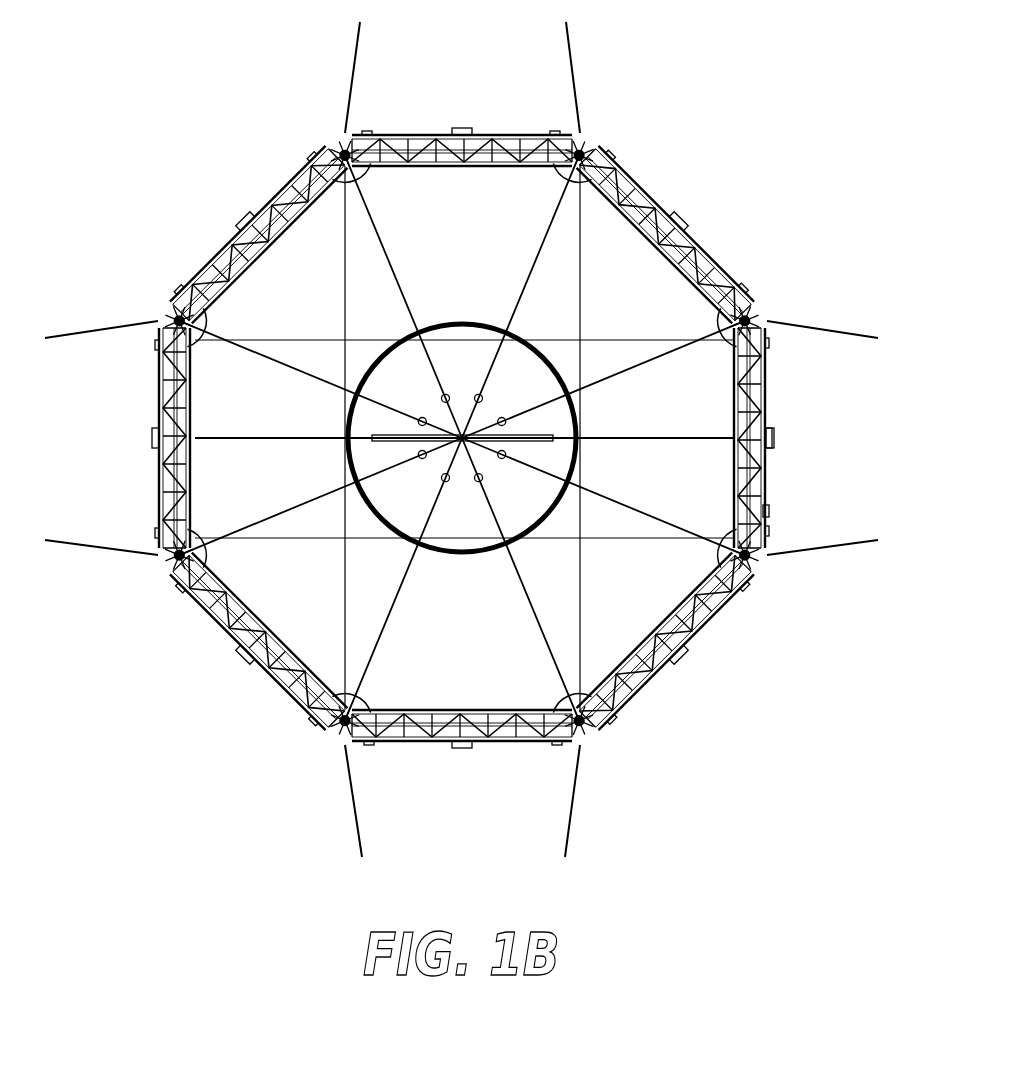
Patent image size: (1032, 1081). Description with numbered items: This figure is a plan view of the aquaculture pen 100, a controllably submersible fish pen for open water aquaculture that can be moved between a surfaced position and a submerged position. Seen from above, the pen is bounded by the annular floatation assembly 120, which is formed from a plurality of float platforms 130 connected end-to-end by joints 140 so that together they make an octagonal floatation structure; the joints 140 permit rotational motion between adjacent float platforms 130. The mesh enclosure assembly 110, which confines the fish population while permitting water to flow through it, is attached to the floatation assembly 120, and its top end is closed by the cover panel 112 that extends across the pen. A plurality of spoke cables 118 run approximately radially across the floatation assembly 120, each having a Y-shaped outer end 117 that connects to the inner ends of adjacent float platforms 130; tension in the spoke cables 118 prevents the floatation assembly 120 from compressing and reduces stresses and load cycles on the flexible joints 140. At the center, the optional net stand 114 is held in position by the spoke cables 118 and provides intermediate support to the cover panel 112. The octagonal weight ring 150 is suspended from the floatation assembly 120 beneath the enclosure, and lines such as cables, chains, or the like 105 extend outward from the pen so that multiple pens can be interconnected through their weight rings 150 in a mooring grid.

The aquaculture pen 100 is at (768, 66).
The cables, chains, or the like 105 is at (353, 72).
The mesh enclosure assembly 110 is at (500, 640).
The cover panel 112 is at (608, 258).
The net stand 114 is at (562, 370).
The Y-shaped outer end 117 is at (327, 157).
The spoke cables 118 is at (395, 272).
The floatation assembly 120 is at (768, 512).
The float platforms 130 is at (485, 130).
The joints 140 is at (772, 313).
The weight ring 150 is at (772, 464).